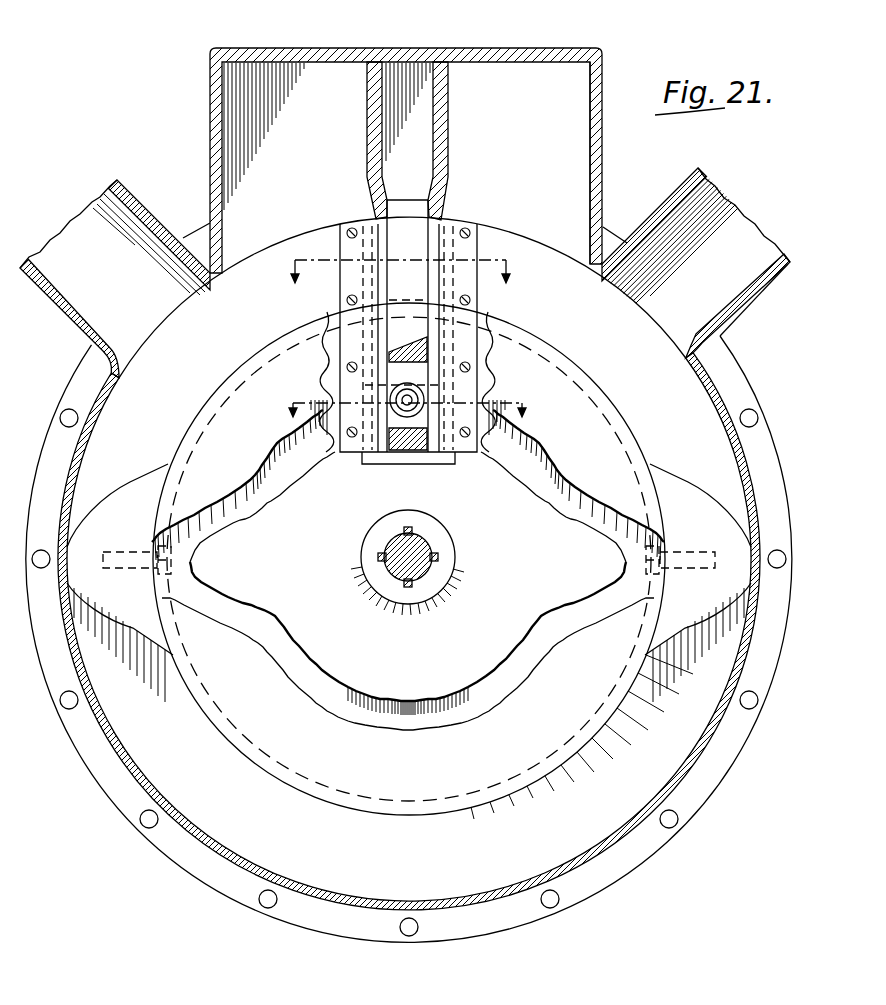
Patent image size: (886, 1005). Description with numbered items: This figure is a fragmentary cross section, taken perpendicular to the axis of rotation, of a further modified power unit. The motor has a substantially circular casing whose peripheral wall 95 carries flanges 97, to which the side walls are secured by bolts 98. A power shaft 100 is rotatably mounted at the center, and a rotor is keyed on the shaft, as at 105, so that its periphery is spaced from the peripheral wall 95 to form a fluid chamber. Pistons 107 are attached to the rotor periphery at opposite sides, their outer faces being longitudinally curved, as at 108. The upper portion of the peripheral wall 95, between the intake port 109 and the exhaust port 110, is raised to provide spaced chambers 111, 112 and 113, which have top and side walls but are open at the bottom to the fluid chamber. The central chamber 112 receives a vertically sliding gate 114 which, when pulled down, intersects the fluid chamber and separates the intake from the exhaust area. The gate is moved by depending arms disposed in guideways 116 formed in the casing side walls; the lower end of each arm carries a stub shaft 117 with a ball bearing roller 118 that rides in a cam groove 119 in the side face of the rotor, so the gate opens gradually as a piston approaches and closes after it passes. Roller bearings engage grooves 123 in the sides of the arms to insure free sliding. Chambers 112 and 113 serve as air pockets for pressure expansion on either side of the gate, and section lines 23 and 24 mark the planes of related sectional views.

The peripheral wall 95 is at (598, 870).
The flanges 97 is at (708, 796).
The bolts 98 is at (150, 819).
The power shaft 100 is at (421, 545).
The key 105 is at (413, 583).
The pistons 107 is at (105, 598).
The longitudinally curved outer faces 108 is at (712, 486).
The intake port 109 is at (677, 198).
The exhaust port 110 is at (55, 314).
The chamber 111 is at (224, 96).
The central chamber 112 is at (410, 92).
The chamber 113 is at (570, 105).
The vertically sliding gate 114 is at (413, 238).
The guideways 116 is at (378, 248).
The stub shaft 117 is at (420, 434).
The ball bearing roller 118 is at (398, 398).
The cam groove 119 is at (283, 643).
The grooves 123 is at (415, 373).
The section line 23- 23 is at (406, 282).
The section line 24- 24 is at (414, 416).